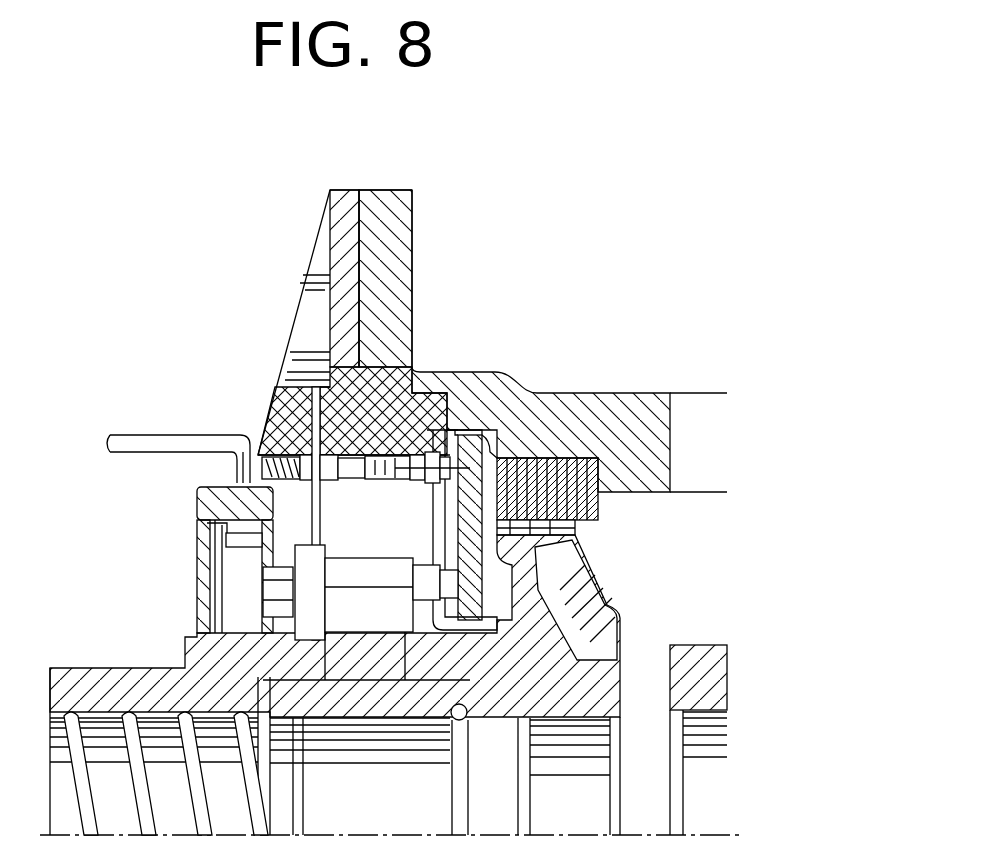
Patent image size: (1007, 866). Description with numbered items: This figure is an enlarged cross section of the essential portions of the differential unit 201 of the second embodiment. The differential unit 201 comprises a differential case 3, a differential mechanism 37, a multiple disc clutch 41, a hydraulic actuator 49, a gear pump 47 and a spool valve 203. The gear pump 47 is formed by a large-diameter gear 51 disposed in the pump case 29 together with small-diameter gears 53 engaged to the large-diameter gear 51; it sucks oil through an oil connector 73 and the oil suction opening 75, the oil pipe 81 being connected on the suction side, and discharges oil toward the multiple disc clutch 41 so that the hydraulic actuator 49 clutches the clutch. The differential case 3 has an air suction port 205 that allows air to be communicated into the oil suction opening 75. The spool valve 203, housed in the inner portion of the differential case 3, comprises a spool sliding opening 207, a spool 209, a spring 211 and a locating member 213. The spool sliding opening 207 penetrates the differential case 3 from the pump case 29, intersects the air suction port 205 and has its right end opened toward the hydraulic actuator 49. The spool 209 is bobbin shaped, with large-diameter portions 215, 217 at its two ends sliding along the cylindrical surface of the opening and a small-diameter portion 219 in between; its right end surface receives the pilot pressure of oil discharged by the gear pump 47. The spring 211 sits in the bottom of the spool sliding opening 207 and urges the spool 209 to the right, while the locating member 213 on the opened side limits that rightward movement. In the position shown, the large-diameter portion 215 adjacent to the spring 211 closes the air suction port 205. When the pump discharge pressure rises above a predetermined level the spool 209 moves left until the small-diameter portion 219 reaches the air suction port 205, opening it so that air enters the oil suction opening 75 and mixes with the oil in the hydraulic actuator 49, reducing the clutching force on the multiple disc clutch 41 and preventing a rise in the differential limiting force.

The differential case 3 is at (409, 183).
The differential unit 201 is at (651, 265).
The differential mechanism 37 is at (576, 283).
The spool sliding opening 207 is at (412, 266).
The spool valve 203 is at (425, 400).
The spool 209 is at (445, 400).
The pump case 29 is at (458, 400).
The locating member 213 is at (462, 440).
The hydraulic actuator 49 is at (494, 420).
The multiple disc clutch 41 is at (561, 447).
The large-diameter portion 217 is at (320, 440).
The small-diameter portion 219 is at (306, 452).
The air suction port 205 is at (290, 455).
The large-diameter portion 215 is at (270, 452).
The spring 211 is at (262, 455).
The oil pipe 81 is at (154, 426).
The oil connector 73 is at (182, 511).
The oil suction opening 75 is at (262, 582).
The gear pump 47 is at (376, 700).
The large-diameter gear 51 is at (335, 685).
The small-diameter gear 53 is at (405, 690).